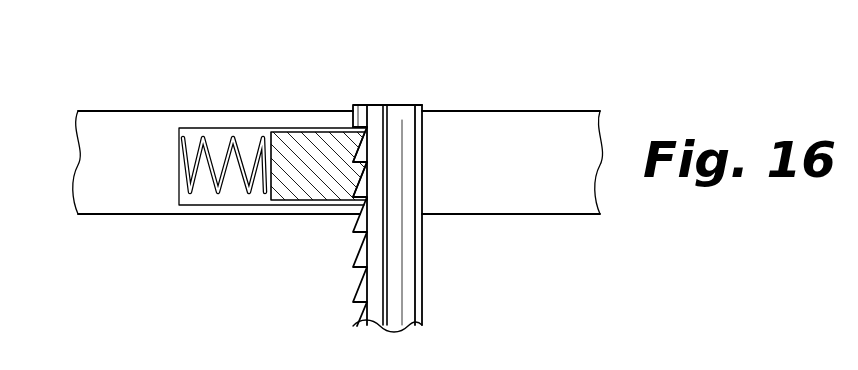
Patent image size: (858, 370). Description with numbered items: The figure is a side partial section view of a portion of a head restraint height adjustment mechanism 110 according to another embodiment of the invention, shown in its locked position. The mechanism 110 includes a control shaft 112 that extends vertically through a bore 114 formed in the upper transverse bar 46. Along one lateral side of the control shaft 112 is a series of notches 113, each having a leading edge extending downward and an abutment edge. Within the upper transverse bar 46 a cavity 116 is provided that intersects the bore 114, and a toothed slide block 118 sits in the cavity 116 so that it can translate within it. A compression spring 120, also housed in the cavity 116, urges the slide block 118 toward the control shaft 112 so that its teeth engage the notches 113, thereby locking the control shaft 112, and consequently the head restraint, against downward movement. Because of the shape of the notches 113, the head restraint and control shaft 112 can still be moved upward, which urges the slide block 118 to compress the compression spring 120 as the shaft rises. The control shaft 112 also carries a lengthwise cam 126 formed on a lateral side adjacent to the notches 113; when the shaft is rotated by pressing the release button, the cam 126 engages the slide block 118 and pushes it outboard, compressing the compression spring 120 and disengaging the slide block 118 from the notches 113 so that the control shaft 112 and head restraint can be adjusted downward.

The upper transverse bar 46 is at (552, 214).
The height adjustment mechanism 110 is at (204, 52).
The control shaft 112 is at (425, 307).
The notches 113 is at (360, 282).
The bore 114 is at (422, 150).
The cavity 116 is at (232, 132).
The toothed slide block 118 is at (318, 162).
The compression spring 120 is at (217, 193).
The lengthwise cam 126 is at (389, 187).